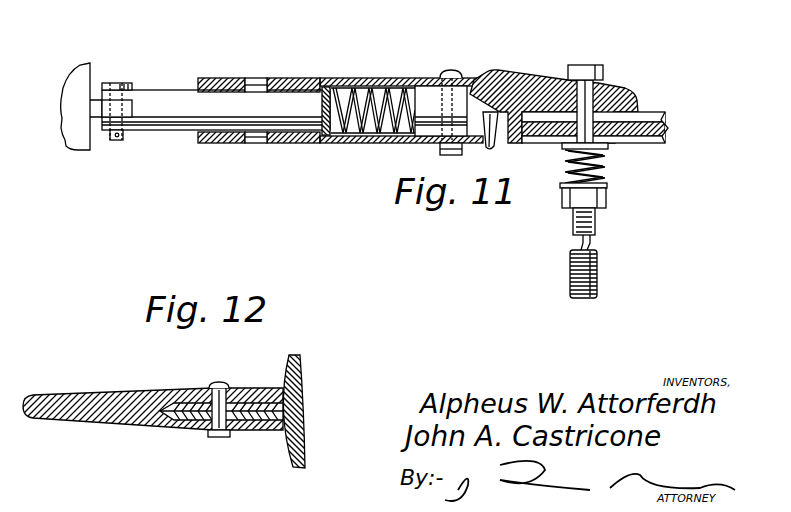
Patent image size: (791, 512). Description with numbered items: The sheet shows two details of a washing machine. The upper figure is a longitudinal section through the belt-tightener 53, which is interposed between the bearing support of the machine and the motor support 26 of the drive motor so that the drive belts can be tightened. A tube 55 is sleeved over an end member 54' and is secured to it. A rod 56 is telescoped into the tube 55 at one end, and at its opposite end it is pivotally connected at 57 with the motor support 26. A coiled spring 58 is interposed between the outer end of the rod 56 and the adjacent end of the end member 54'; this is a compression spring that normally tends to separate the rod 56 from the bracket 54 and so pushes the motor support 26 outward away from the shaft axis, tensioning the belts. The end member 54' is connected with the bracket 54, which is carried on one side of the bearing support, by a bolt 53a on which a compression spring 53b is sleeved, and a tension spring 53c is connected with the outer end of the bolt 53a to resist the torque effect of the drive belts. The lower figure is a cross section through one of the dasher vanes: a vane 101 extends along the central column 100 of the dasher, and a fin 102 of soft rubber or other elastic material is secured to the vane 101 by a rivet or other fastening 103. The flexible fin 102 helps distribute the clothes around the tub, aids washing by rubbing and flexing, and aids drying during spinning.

In FIG. 11, the motor support 26 is at (93, 70).
In FIG. 11, the pivotal connection 57 is at (120, 83).
In FIG. 11, the rod 56 is at (174, 90).
In FIG. 11, the belt-tightener 53 is at (257, 80).
In FIG. 11, the coiled spring 58 is at (377, 93).
In FIG. 11, the tube 55 is at (357, 145).
In FIG. 11, the end member 54' is at (553, 89).
In FIG. 11, the bolt 53a is at (595, 64).
In FIG. 11, the bracket 54 is at (614, 108).
In FIG. 11, the compression spring 53b is at (607, 169).
In FIG. 11, the tension spring 53c is at (598, 272).
In FIG. 12, the fin 102 is at (118, 391).
In FIG. 12, the rivet or fastening 103 is at (220, 383).
In FIG. 12, the vane 101 is at (297, 403).
In FIG. 12, the central column 100 is at (300, 448).